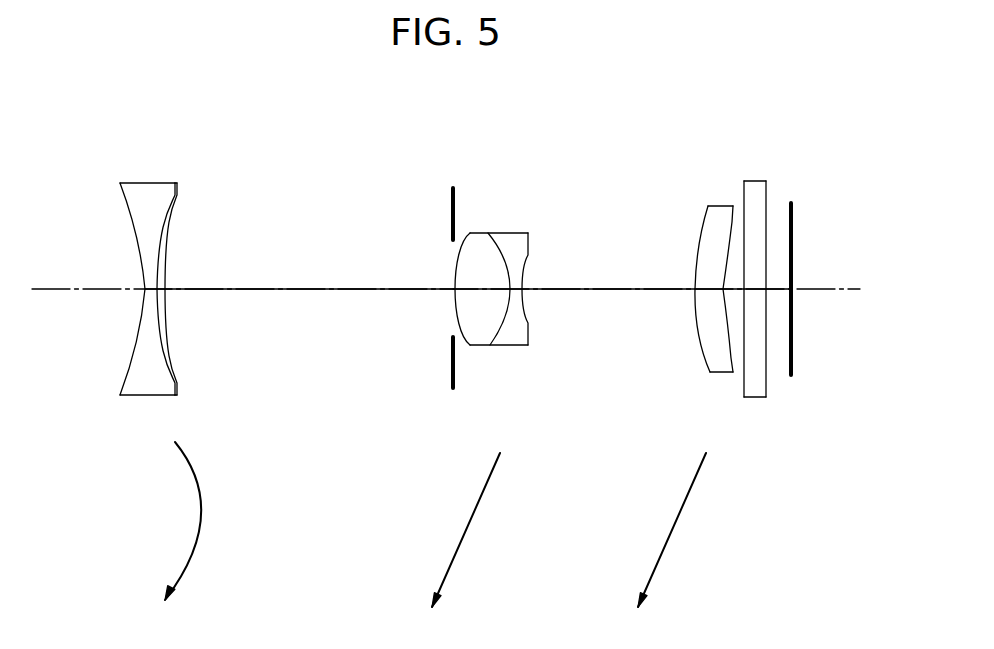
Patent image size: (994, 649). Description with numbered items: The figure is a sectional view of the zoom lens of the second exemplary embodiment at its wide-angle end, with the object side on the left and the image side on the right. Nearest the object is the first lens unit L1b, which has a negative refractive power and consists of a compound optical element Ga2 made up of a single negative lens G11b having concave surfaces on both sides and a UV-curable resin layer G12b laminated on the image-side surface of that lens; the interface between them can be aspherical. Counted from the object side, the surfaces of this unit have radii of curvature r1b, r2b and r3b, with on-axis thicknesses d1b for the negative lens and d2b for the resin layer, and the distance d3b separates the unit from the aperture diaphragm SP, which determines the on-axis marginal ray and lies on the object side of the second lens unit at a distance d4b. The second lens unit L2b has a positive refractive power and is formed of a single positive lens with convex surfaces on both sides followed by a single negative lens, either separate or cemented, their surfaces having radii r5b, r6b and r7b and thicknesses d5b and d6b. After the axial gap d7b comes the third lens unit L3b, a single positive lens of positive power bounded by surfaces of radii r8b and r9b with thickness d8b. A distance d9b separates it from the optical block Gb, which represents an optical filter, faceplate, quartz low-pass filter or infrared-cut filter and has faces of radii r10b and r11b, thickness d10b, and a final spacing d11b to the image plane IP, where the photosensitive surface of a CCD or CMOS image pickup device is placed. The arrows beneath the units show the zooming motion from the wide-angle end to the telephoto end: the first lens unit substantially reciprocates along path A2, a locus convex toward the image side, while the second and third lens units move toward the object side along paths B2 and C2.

The first lens unit L1b is at (70, 82).
The compound optical element Ga2 is at (183, 120).
The negative lens G11b is at (138, 186).
The UV-curable resin layer G12b is at (174, 213).
The radius of curvature of first optical surface r1b is at (135, 233).
The radius of curvature of second optical surface r2b is at (163, 252).
The radius of curvature of third optical surface r3b is at (168, 235).
The on-axis distance between first and second surfaces d1b is at (145, 295).
The on-axis distance between second and third surfaces d2b is at (165, 295).
The on-axis distance between third and fourth surfaces d3b is at (302, 292).
The aperture diaphragm SP is at (452, 200).
The on-axis distance between fourth and fifth surfaces d4b is at (455, 292).
The second lens unit L2b is at (457, 147).
The radius of curvature of fifth optical surface r5b is at (467, 241).
The radius of curvature of sixth optical surface r6b is at (496, 244).
The radius of curvature of seventh optical surface r7b is at (527, 260).
The on-axis distance between fifth and sixth surfaces d5b is at (483, 292).
The on-axis distance between sixth and seventh surfaces d6b is at (515, 292).
The on-axis distance between seventh and eighth surfaces d7b is at (593, 292).
The third lens unit L3b is at (690, 88).
The radius of curvature of eighth optical surface r8b is at (703, 236).
The radius of curvature of ninth optical surface r9b is at (733, 226).
The on-axis distance between eighth and ninth surfaces d8b is at (708, 291).
The on-axis distance between ninth and tenth surfaces d9b is at (735, 291).
The optical block Gb is at (757, 192).
The radius of curvature of tenth optical surface r10b is at (742, 194).
The radius of curvature of eleventh optical surface r11b is at (767, 203).
The on-axis distance between tenth and eleventh surfaces d10b is at (755, 291).
The on-axis distance between eleventh surface and image plane d11b is at (778, 291).
The image plane IP is at (793, 221).
The movement locus of first lens unit A2 is at (200, 521).
The movement of second lens unit B2 is at (475, 530).
The movement of third lens unit C2 is at (679, 530).